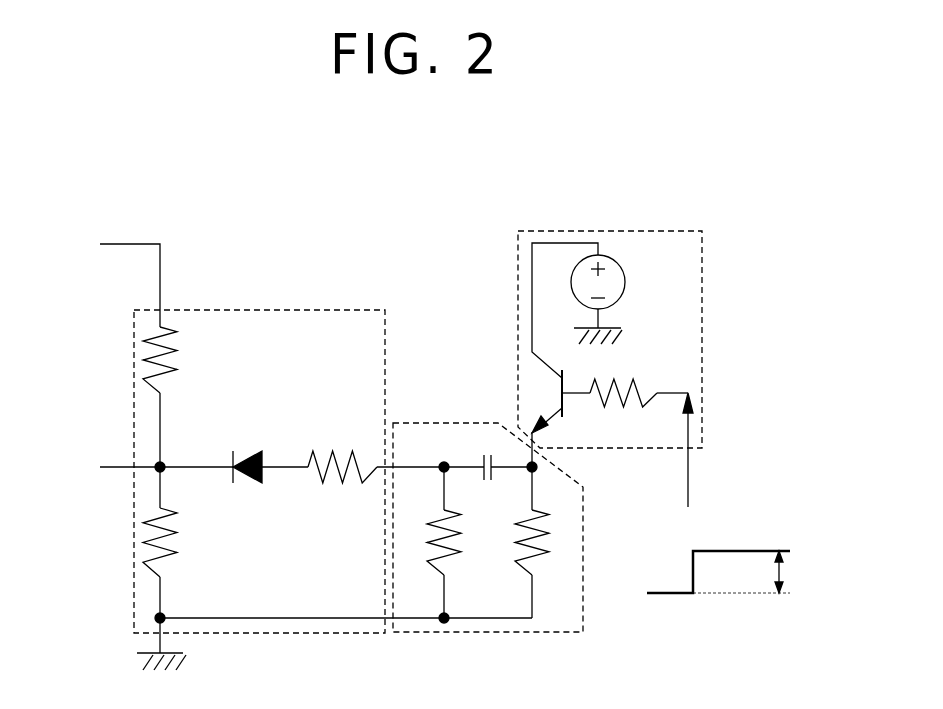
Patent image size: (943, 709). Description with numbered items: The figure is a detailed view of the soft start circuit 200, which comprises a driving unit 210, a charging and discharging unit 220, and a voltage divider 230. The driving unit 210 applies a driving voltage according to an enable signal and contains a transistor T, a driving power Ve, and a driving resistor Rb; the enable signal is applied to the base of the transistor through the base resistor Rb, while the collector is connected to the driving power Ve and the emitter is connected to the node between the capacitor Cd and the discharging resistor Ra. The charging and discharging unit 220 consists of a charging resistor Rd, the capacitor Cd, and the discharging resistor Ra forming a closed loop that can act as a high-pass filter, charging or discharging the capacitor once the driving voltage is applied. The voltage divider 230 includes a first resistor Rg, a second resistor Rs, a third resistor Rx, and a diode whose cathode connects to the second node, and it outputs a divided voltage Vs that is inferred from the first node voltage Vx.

The soft start circuit 200 is at (367, 162).
The driving unit 210 is at (704, 231).
The charging and discharging unit 220 is at (447, 422).
The voltage divider 230 is at (260, 309).